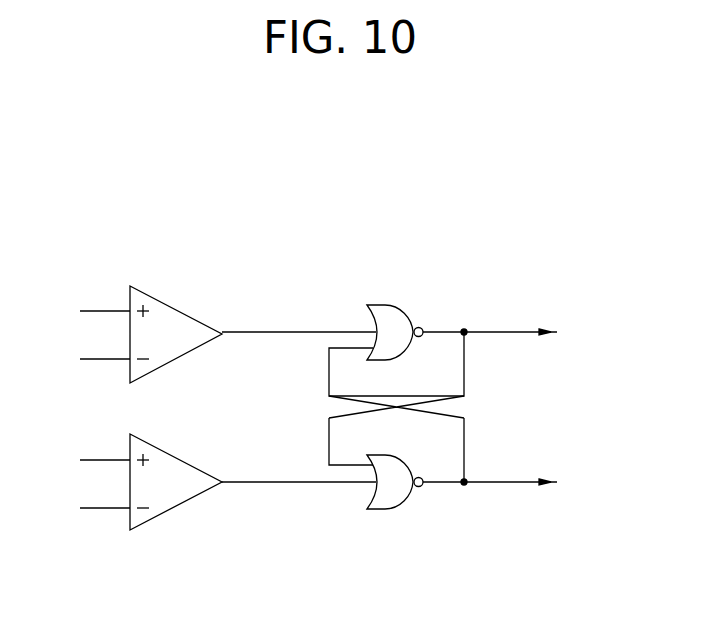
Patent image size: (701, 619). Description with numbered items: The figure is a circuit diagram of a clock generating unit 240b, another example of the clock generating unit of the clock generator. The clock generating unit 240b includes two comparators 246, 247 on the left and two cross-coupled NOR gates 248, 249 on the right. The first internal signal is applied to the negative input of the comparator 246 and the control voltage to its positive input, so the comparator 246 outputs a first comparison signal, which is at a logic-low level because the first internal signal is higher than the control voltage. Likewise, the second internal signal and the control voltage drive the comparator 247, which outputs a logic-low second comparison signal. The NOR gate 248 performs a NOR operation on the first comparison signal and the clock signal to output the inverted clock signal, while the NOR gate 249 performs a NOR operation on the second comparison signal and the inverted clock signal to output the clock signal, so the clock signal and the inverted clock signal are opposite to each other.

The clock generating unit 240b is at (337, 188).
The comparator 246 is at (178, 310).
The comparator 247 is at (178, 459).
The NOR gate 248 is at (382, 305).
The NOR gate 249 is at (383, 509).